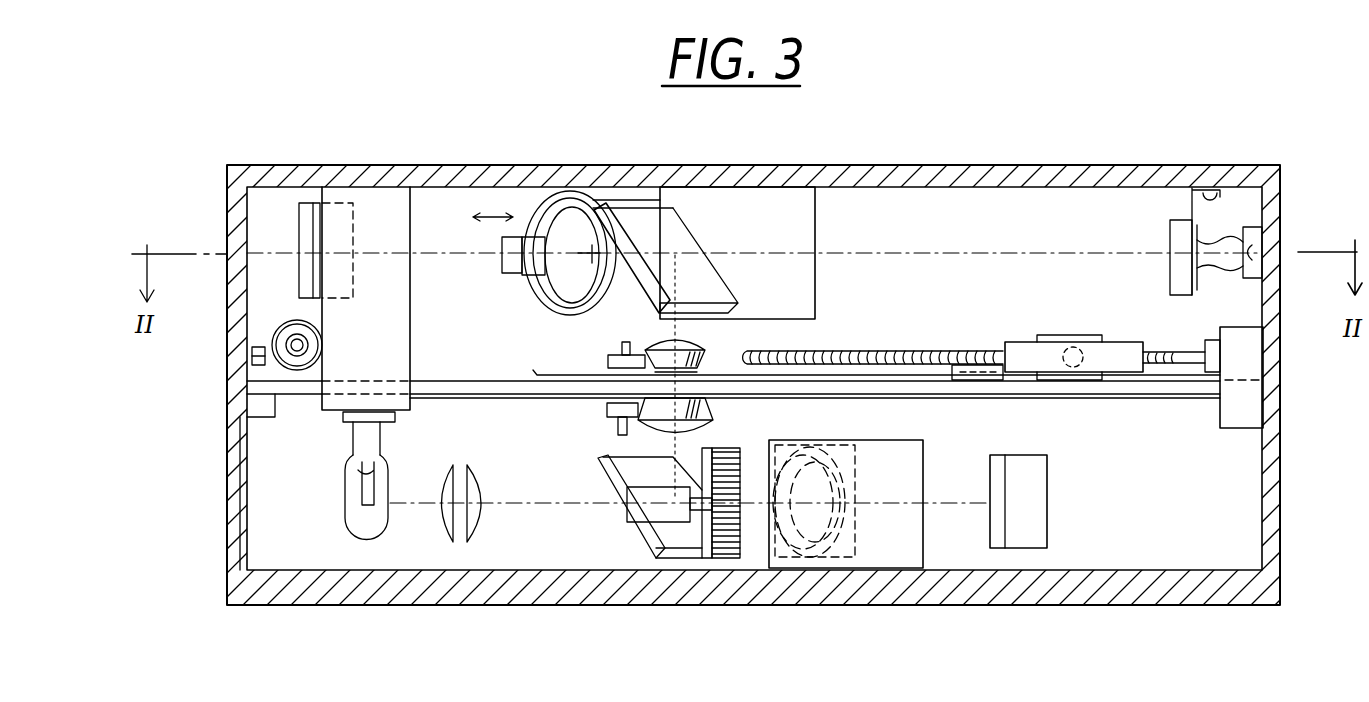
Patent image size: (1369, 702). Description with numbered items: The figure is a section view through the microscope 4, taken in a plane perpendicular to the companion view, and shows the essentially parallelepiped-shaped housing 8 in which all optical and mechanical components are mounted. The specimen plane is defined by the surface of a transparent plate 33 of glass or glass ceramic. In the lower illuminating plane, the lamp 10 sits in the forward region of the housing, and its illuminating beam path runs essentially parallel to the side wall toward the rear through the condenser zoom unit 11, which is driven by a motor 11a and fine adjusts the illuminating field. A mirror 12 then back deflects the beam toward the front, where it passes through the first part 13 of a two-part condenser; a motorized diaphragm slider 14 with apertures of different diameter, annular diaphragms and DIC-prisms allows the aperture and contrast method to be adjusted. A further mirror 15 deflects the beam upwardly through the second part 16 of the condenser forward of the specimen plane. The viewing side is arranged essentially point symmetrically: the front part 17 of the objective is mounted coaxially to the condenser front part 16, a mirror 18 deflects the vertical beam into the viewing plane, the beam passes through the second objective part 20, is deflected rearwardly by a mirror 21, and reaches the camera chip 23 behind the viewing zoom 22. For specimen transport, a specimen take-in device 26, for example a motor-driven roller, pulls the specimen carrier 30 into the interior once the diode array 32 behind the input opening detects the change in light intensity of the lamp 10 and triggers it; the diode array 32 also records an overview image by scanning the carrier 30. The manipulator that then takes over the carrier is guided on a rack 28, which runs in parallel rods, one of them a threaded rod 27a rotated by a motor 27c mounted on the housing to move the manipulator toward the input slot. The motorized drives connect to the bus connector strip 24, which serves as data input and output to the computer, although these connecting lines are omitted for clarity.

The microscope 4 is at (1024, 147).
The housing 8 is at (1003, 597).
The lamp 10 is at (350, 523).
The condenser zoom unit 11 is at (906, 452).
The motor 11a is at (632, 512).
The mirror 12 is at (1037, 488).
The first part of a two-part condenser 13 is at (782, 455).
The motorized diaphragm slider 14 is at (855, 460).
The mirror 15 is at (598, 462).
The second part of the condenser 16 is at (710, 410).
The front part of the objective 17 is at (697, 348).
The mirror 18 is at (642, 285).
The second objective part 20 is at (527, 290).
The mirror 21 is at (298, 257).
The viewing zoom 22 is at (815, 285).
The camera chip 23 is at (1172, 235).
The bus connector strip 24 is at (1243, 280).
The specimen take-in device 26 is at (292, 328).
The threaded rod 27a is at (982, 350).
The motor 27c is at (1237, 395).
The rack 28 is at (1073, 347).
The specimen carrier 30 is at (537, 375).
The diode array 32 is at (252, 357).
The transparent plate 33 is at (472, 387).